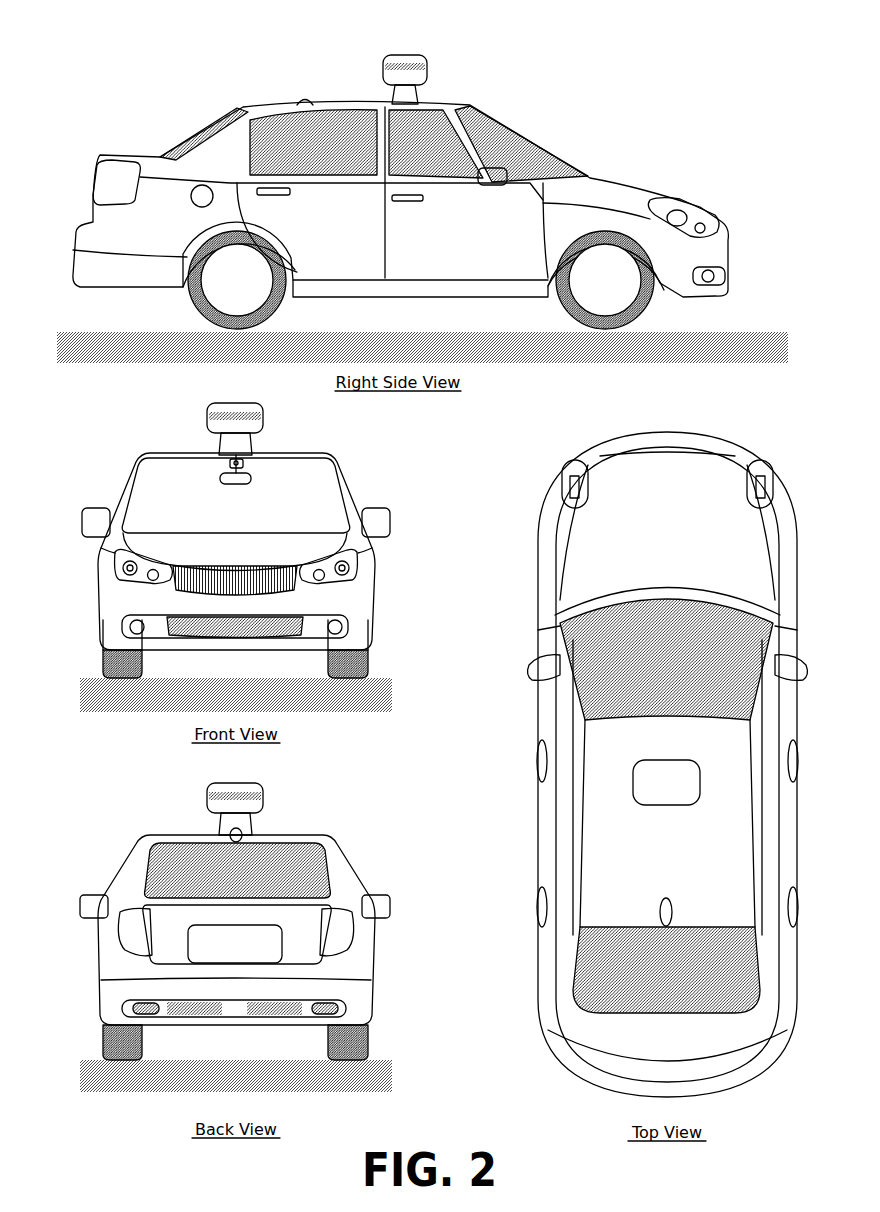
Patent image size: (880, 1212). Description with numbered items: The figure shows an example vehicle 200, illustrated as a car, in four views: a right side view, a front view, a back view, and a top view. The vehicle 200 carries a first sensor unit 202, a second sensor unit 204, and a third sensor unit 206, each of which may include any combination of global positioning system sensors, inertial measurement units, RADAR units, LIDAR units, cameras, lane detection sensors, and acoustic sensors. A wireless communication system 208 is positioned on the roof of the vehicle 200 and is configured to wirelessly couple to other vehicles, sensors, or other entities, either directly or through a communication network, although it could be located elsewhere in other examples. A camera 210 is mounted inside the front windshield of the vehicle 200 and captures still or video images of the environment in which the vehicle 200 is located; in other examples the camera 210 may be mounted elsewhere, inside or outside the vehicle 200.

The vehicle 200 is at (68, 143).
The first sensor unit 202 is at (430, 76).
The second sensor unit 204 is at (716, 222).
The third sensor unit 206 is at (727, 274).
The wireless communication system 208 is at (303, 98).
The camera 210 is at (247, 462).